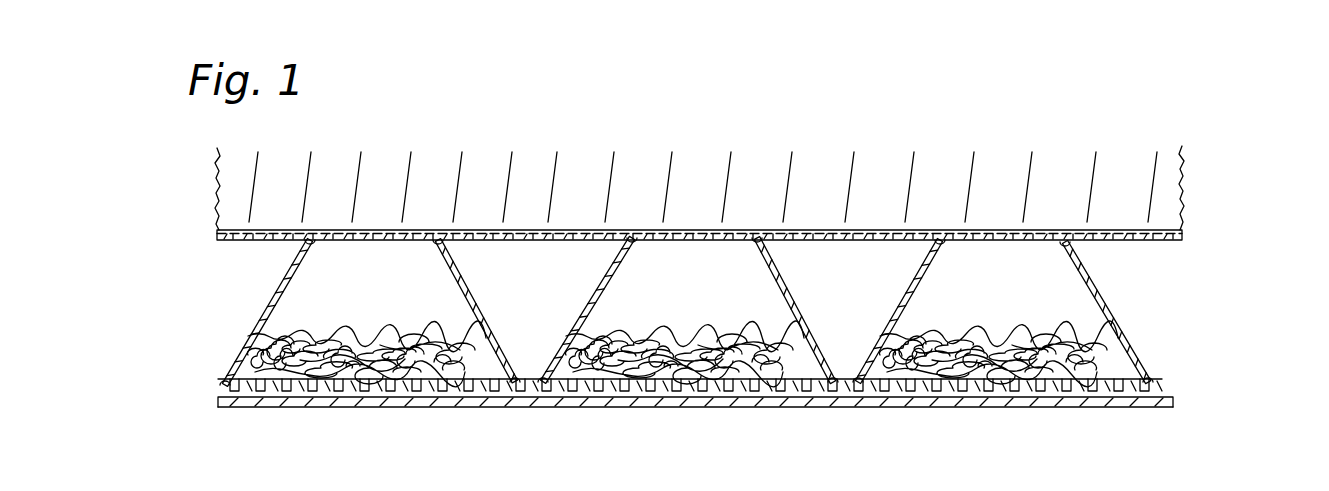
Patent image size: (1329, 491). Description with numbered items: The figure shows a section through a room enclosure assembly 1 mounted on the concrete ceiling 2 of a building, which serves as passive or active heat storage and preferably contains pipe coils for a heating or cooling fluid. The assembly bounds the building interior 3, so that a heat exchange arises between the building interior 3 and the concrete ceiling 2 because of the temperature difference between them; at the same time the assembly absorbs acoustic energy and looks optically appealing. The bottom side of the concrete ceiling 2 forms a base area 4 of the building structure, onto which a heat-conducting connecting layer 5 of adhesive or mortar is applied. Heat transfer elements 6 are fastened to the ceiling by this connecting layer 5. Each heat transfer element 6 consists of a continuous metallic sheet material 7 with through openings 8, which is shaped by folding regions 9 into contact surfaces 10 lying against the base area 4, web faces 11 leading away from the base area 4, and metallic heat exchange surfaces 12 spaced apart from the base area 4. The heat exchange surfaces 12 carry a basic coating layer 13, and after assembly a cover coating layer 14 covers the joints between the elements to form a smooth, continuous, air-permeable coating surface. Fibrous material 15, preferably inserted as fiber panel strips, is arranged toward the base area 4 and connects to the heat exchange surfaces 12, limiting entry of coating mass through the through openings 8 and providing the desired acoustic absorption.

The room enclosure assembly 1 is at (268, 436).
The concrete ceiling 2 is at (1183, 186).
The building interior 3 is at (806, 473).
The base area 4 is at (1005, 242).
The heat-conducting connecting layer 5 is at (1050, 243).
The heat transfer element 6 is at (1226, 311).
The continuous metallic sheet material 7 is at (1110, 289).
The through openings 8 is at (1126, 319).
The folding region 9 is at (748, 248).
The contact surface 10 is at (568, 235).
The web face 11 is at (887, 311).
The metallic heat exchange surface 12 is at (628, 385).
The basic coating layer 13 is at (1075, 404).
The cover coating layer 14 is at (1138, 407).
The fibrous material 15 is at (662, 335).